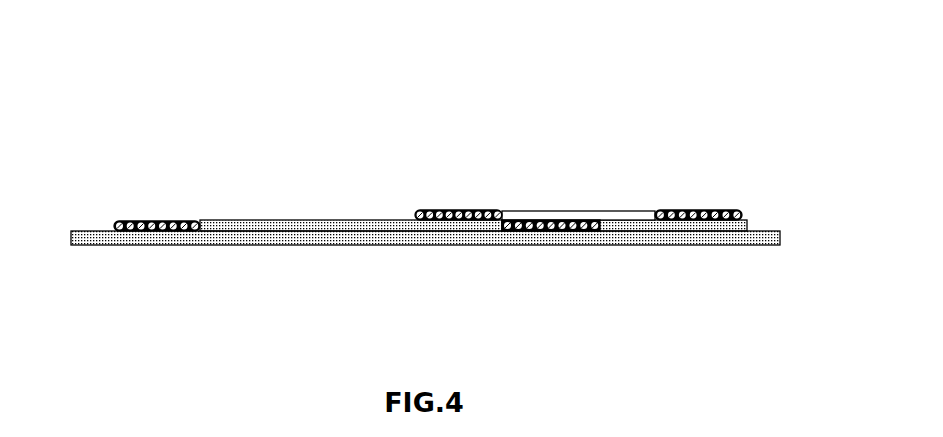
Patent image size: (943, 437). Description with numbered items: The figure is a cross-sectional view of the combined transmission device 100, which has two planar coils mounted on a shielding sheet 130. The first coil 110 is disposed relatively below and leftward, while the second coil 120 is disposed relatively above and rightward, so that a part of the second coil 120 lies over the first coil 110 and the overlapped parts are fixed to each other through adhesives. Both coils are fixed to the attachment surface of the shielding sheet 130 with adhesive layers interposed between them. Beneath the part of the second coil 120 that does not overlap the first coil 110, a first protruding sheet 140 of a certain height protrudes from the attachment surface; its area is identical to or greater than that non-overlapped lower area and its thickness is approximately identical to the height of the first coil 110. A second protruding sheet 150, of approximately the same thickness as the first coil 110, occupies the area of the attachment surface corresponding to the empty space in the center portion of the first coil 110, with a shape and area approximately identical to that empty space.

The combined transmission device 100 is at (358, 151).
The first coil 110 is at (160, 220).
The second coil 120 is at (460, 212).
The shielding sheet 130 is at (388, 246).
The first protruding sheet 140 is at (622, 220).
The second protruding sheet 150 is at (263, 227).